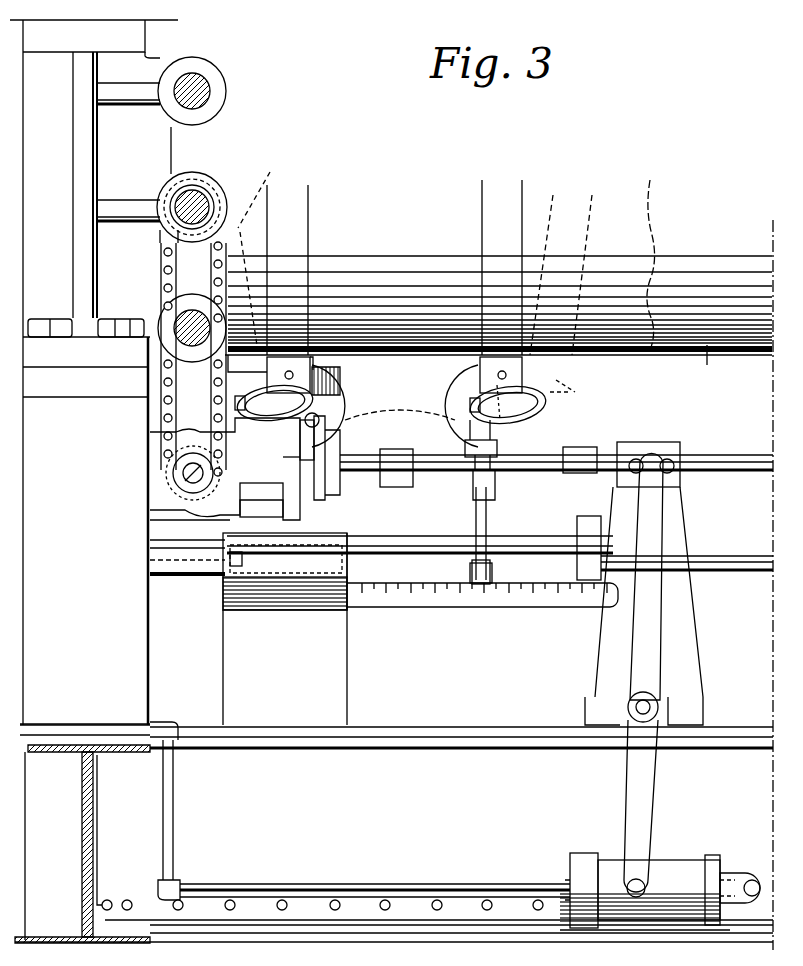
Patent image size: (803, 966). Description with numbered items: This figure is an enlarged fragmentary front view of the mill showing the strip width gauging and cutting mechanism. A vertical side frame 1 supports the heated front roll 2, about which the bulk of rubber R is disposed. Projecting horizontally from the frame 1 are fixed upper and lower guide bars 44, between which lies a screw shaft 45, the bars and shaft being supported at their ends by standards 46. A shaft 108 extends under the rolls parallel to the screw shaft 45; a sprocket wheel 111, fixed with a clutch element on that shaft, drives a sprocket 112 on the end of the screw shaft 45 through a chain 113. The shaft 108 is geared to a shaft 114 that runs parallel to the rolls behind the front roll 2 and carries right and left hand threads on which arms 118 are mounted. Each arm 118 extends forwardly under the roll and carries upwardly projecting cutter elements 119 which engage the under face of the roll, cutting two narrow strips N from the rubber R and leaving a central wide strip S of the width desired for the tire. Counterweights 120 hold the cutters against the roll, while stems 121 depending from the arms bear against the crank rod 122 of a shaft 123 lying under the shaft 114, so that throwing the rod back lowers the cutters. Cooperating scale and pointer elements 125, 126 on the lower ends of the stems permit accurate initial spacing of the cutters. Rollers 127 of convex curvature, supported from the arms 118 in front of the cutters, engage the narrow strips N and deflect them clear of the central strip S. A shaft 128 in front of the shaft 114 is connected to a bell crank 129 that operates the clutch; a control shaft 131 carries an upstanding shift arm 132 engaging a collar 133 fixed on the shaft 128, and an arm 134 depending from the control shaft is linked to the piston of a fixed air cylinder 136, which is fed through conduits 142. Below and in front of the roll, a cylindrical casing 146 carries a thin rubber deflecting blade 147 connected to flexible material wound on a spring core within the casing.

The vertical side frames 1 is at (120, 672).
The front roll 2 is at (740, 585).
The guide bars 44 is at (205, 80).
The screw shaft 45 is at (195, 200).
The standards 46 is at (148, 160).
The shaft 108 is at (152, 505).
The sprocket wheel 111 is at (182, 462).
The sprocket 112 is at (168, 238).
The chain 113 is at (165, 408).
The shaft 114 is at (730, 450).
The arms 118 is at (300, 445).
The cutter elements 119 is at (320, 362).
The counterweights 120 is at (330, 425).
The stems 121 is at (470, 517).
The crank rod 122 is at (515, 533).
The shaft 123 is at (706, 565).
The scale element 125 is at (400, 608).
The pointer element 126 is at (478, 585).
The rollers 127 is at (245, 400).
The shaft 128 is at (372, 487).
The bell crank 129 is at (300, 452).
The control shaft 131 is at (658, 700).
The shift arm 132 is at (650, 622).
The collar 133 is at (662, 446).
The arm 134 is at (645, 807).
The air cylinder 136 is at (612, 870).
The conduits 142 is at (225, 883).
The cylindrical casing 146 is at (278, 607).
The rubber deflecting blade 147 is at (225, 583).
The central wide strip S is at (405, 290).
The bulk of rubber R is at (633, 268).
The narrow strips N is at (415, 277).